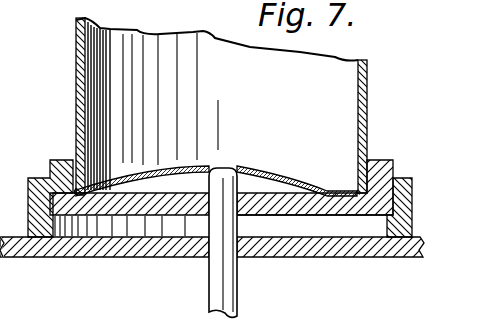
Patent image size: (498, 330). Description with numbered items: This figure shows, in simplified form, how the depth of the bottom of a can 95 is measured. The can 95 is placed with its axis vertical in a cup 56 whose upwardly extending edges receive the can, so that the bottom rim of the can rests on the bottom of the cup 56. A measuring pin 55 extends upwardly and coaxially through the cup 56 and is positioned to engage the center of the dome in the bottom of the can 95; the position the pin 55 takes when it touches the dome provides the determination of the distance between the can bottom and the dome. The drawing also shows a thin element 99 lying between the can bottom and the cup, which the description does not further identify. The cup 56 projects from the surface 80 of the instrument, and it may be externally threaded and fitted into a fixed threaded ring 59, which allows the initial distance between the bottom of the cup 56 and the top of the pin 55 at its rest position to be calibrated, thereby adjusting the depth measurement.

The can 95 is at (368, 107).
The diaphragm gasket 99 is at (255, 165).
The cup 56 is at (375, 160).
The fixed threaded ring 59 is at (28, 178).
The surface 80 is at (70, 252).
The measuring pin 55 is at (238, 298).